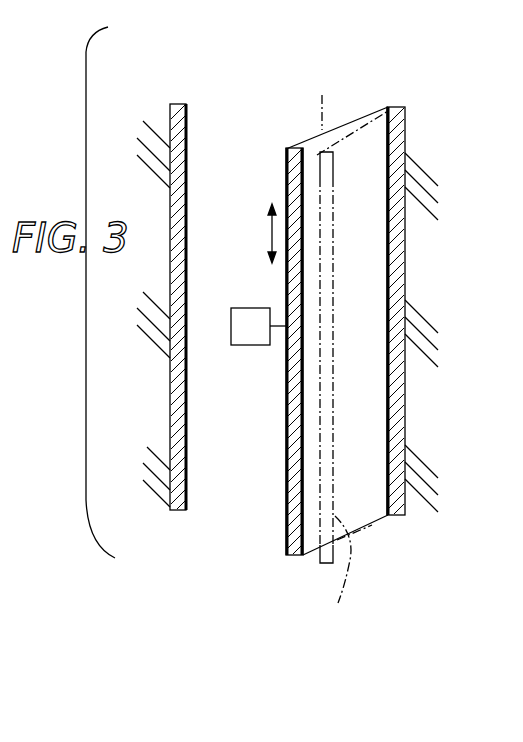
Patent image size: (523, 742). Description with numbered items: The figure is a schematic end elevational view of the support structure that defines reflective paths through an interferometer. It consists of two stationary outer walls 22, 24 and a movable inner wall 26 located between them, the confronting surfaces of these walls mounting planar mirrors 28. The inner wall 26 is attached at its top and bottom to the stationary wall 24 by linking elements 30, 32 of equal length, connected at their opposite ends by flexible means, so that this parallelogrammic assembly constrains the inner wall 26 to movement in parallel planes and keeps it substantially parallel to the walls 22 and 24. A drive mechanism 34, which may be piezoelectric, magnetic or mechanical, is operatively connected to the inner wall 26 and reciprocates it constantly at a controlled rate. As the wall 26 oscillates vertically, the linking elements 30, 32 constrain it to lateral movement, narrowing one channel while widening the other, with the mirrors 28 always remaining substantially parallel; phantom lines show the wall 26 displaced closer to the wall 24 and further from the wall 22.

The stationary outer wall 22 is at (178, 517).
The stationary outer wall 24 is at (407, 514).
The movable inner wall 26 is at (321, 168).
The planar mirror 28 is at (187, 124).
The linking element 30 is at (348, 124).
The linking element 32 is at (357, 525).
The drive mechanism 34 is at (242, 315).